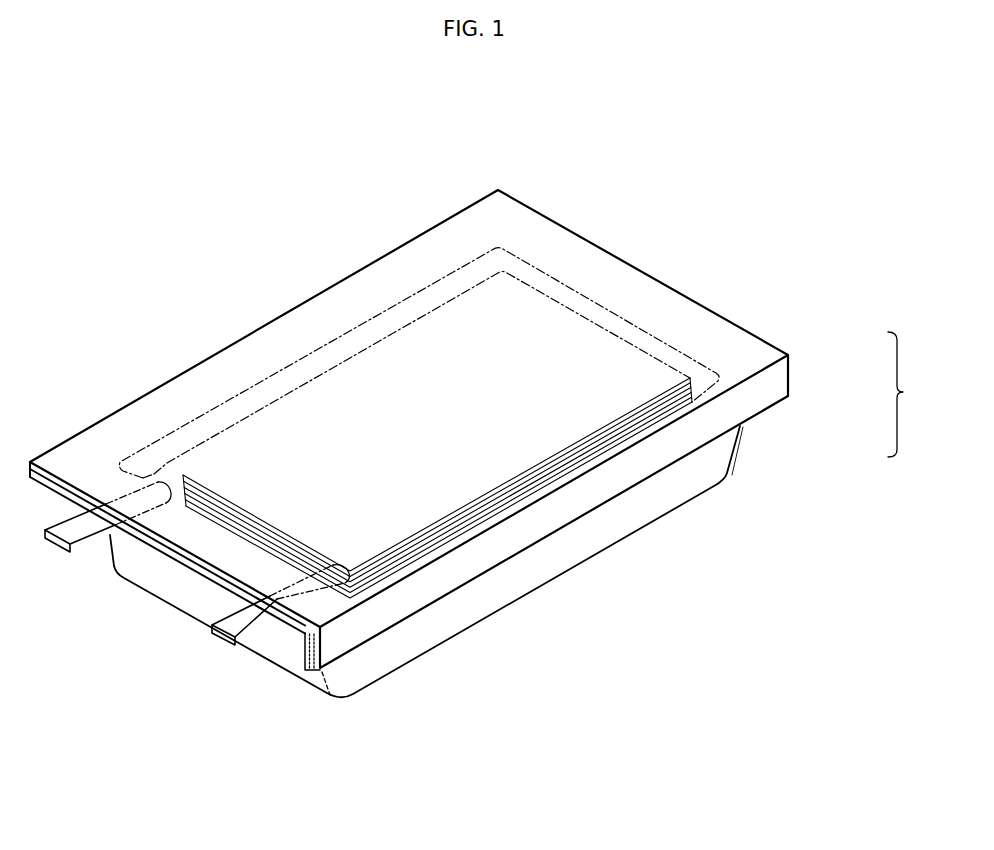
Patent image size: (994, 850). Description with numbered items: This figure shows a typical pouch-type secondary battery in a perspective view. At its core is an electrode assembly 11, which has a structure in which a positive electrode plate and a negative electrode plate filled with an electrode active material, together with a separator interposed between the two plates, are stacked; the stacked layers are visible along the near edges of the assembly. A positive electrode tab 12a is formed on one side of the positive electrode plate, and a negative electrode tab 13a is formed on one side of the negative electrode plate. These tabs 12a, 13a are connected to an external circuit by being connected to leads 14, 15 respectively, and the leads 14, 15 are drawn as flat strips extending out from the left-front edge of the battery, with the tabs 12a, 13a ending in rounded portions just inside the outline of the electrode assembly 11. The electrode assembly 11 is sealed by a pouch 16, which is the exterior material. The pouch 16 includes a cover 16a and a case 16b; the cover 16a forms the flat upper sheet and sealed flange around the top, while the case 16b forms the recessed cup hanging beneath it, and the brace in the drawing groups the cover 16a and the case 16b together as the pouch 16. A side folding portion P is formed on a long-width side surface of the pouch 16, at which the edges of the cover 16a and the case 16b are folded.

The electrode assembly 11 is at (320, 384).
The positive electrode tab 12a is at (350, 590).
The negative electrode tab 13a is at (162, 474).
The lead 14 is at (232, 631).
The lead 15 is at (63, 537).
The pouch 16 is at (482, 443).
The cover 16a is at (722, 360).
The case 16b is at (722, 456).
The side folding portion P is at (587, 500).